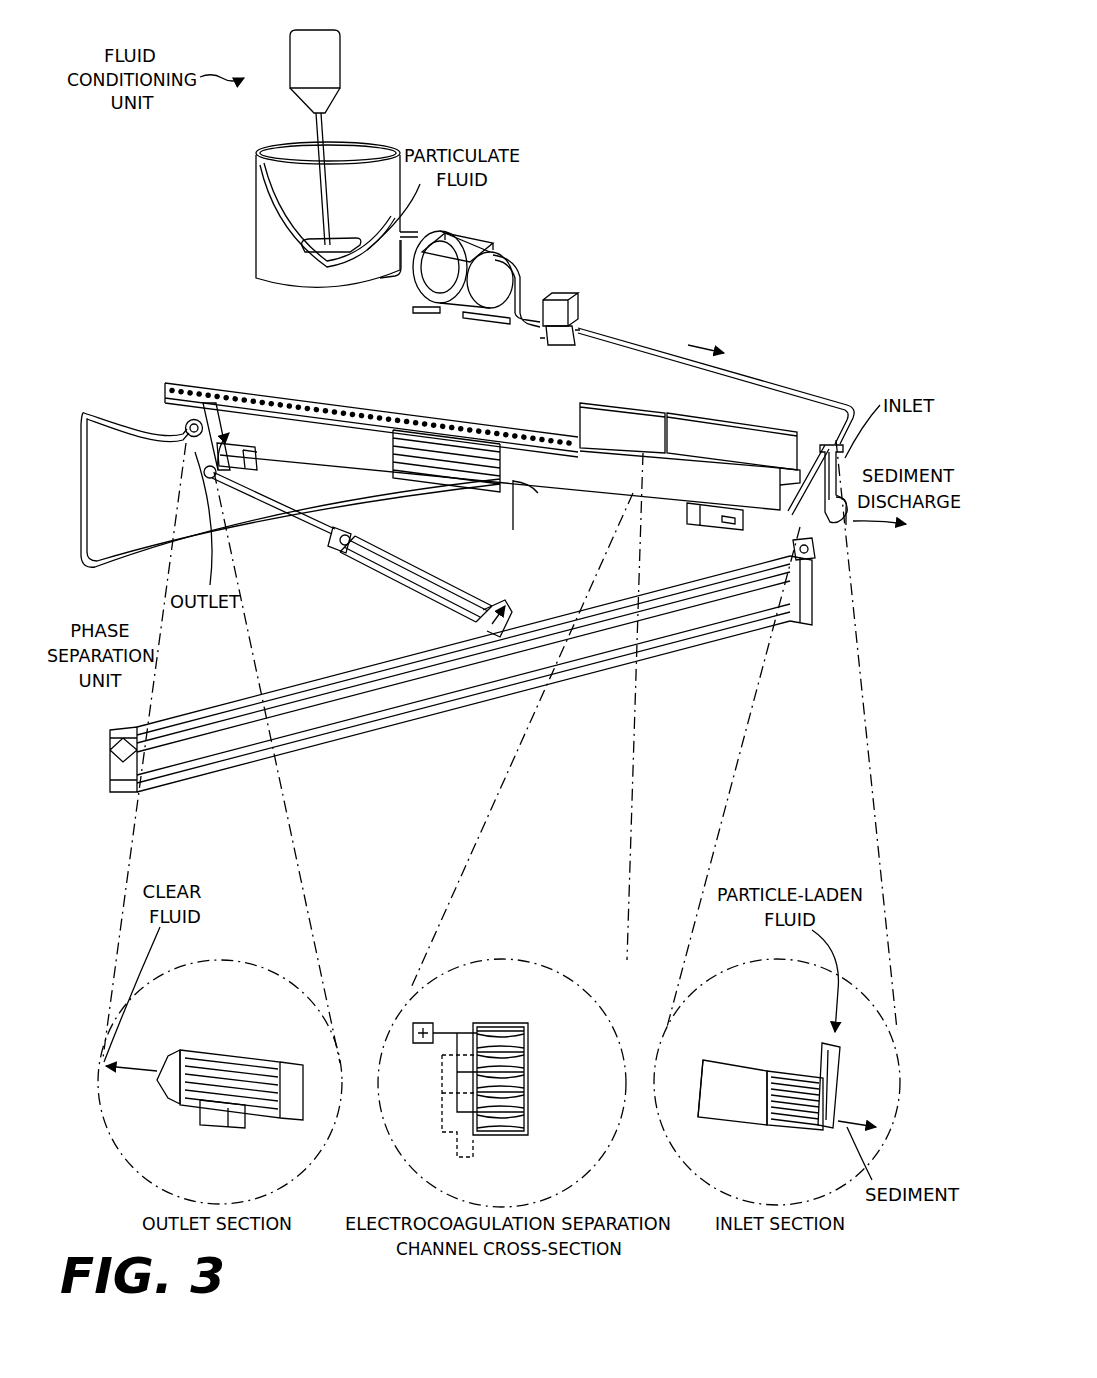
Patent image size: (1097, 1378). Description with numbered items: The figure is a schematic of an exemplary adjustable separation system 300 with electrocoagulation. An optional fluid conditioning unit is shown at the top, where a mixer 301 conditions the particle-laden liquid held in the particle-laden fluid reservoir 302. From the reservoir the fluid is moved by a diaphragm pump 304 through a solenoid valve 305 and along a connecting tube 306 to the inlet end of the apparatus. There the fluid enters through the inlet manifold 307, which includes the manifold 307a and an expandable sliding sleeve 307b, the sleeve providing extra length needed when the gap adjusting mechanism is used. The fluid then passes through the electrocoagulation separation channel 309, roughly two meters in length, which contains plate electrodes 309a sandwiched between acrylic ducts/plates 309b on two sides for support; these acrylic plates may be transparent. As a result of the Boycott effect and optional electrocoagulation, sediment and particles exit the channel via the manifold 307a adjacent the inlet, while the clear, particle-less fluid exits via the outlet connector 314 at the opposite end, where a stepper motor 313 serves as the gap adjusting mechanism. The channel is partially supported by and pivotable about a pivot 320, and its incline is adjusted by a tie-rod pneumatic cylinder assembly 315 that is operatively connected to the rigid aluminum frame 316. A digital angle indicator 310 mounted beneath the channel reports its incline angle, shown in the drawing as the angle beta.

The adjustable separation system 300 is at (577, 86).
The mixer 301 is at (346, 53).
The particle-laden liquid/fluid reservoir 302 is at (352, 147).
The diaphragm pump 304 is at (490, 243).
The solenoid valve 305 is at (553, 293).
The connecting tube 306 is at (633, 344).
The inlet manifold 307 is at (858, 466).
The manifold 307a is at (830, 524).
The expandable sliding sleeve 307b is at (752, 1078).
The electrocoagulation separation channel 309 is at (664, 483).
The plate electrodes 309a is at (528, 1045).
The acrylic ducts/plates 309b is at (530, 1093).
The digital angle indicator 310 is at (722, 530).
The stepper motor 313 is at (236, 440).
The outlet connector 314 is at (183, 422).
The tie-rod pneumatic cylinder assembly 315 is at (373, 568).
The frame 316 is at (130, 793).
The pivot 320 is at (806, 558).